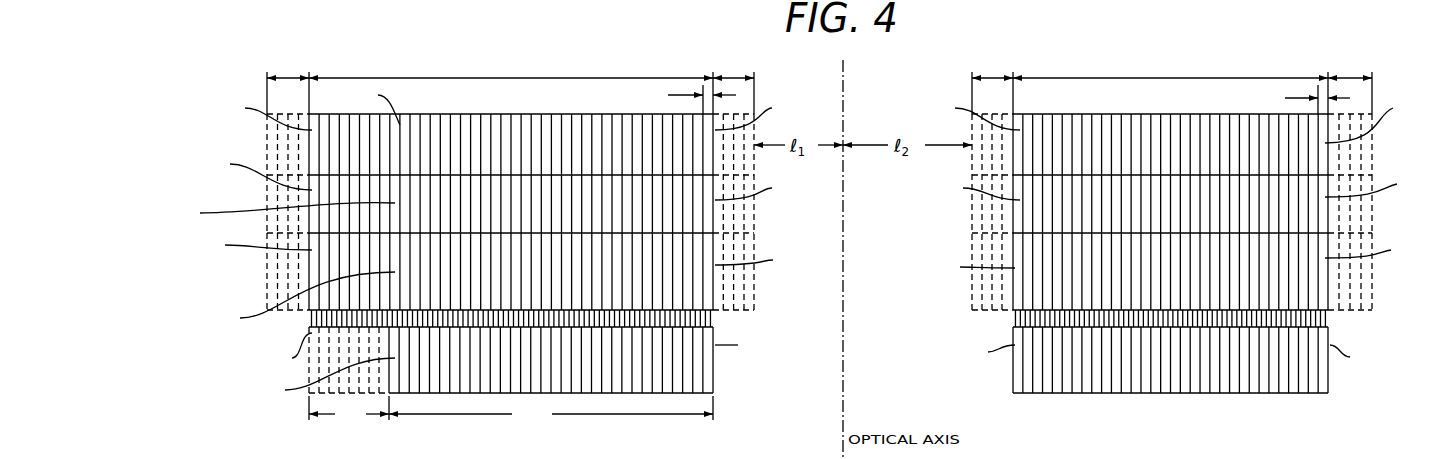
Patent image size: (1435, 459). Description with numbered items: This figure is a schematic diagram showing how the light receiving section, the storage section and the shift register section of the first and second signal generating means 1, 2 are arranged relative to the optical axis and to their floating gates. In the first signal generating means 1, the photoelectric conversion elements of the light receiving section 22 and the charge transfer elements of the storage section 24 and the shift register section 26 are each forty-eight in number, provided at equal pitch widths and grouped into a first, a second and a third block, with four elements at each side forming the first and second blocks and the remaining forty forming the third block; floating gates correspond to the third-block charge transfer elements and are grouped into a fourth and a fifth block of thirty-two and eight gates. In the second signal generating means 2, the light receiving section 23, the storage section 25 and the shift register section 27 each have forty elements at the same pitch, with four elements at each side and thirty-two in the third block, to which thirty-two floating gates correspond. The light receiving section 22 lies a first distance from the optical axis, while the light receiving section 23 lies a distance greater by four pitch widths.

The first signal generating means 1 is at (571, 70).
The second signal generating means 2 is at (1230, 74).
The light receiving section 22 is at (267, 128).
The storage section 24 is at (267, 192).
The shift register section 26 is at (267, 265).
The light receiving section 23 is at (1372, 152).
The storage section 25 is at (1372, 212).
The shift register section 27 is at (1372, 275).